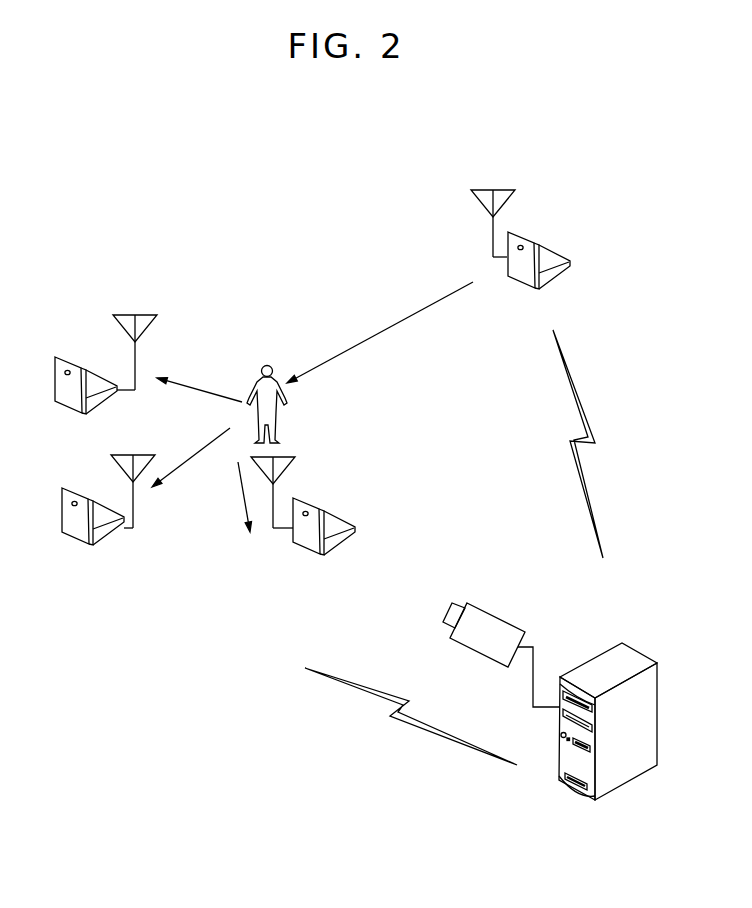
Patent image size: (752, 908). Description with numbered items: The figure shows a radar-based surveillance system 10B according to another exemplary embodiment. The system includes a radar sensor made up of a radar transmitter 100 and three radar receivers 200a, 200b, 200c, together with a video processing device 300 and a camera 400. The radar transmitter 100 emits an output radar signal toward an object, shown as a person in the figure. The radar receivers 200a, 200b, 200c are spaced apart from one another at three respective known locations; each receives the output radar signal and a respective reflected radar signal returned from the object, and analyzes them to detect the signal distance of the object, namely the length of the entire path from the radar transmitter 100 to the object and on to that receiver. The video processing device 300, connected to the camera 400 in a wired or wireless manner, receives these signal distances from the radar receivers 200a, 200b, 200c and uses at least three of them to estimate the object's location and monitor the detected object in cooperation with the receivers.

The radar-based surveillance system 10B is at (352, 456).
The radar transmitter 100 is at (524, 233).
The radar receiver 200a is at (82, 362).
The radar receiver 200b is at (78, 543).
The radar receiver 200c is at (335, 545).
The video processing device 300 is at (600, 657).
The camera 400 is at (488, 610).